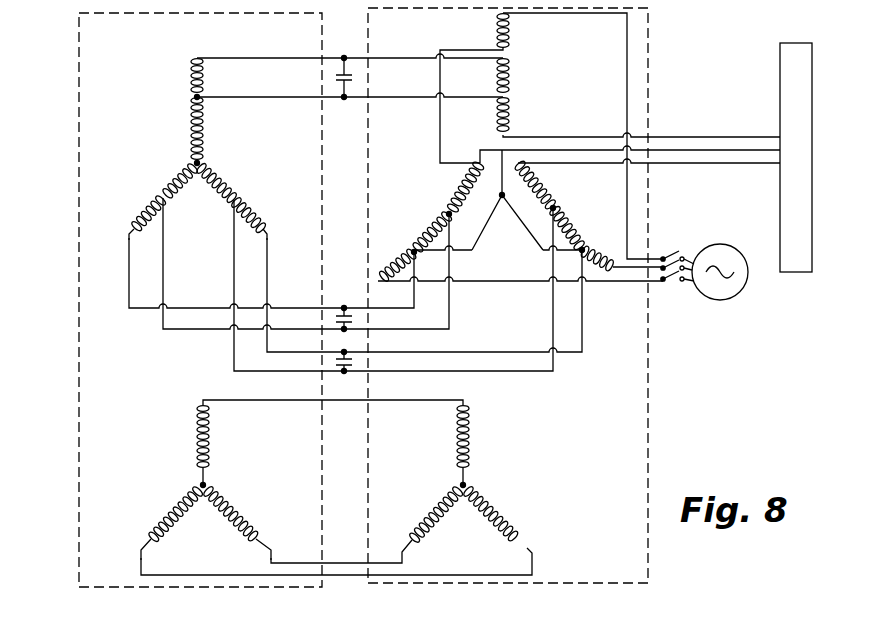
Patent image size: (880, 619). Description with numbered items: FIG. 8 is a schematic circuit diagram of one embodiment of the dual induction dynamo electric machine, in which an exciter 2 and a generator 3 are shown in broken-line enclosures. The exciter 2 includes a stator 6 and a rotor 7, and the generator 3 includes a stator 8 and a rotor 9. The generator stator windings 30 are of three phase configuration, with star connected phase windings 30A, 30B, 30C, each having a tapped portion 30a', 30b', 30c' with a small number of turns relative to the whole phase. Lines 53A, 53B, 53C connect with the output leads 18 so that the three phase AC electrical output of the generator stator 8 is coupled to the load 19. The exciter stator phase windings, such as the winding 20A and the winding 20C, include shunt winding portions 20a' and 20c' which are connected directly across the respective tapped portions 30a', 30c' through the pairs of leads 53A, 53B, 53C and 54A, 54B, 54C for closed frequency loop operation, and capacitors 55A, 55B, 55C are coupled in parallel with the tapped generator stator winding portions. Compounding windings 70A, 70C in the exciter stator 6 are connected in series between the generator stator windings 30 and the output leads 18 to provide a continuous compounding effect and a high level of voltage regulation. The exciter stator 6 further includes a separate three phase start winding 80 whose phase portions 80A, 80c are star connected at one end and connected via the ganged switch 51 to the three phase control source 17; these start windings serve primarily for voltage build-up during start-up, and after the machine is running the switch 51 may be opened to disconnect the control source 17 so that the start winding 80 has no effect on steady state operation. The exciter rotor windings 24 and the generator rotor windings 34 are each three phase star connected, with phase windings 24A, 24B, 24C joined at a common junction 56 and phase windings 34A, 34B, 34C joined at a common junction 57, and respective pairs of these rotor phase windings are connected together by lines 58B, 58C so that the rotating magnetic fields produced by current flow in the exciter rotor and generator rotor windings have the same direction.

The exciter 2 is at (648, 33).
The generator 3 is at (77, 46).
The exciter stator 6 is at (652, 54).
The exciter rotor 7 is at (656, 446).
The generator stator 8 is at (72, 138).
The generator rotor 9 is at (74, 410).
The control source 17 is at (721, 243).
The output leads 18 is at (731, 133).
The electrical load 19 is at (798, 43).
The exciter stator phase winding 20A is at (484, 43).
The shunt winding portion 20a' is at (533, 77).
The exciter stator phase winding 20C is at (542, 254).
The shunt winding portion 20c' is at (580, 225).
The exciter rotor windings 24 is at (474, 475).
The exciter rotor phase winding 24A is at (458, 445).
The exciter rotor phase winding 24B is at (424, 522).
The exciter rotor phase winding 24C is at (508, 512).
The generator stator windings 30 is at (191, 137).
The generator stator phase winding 30A is at (186, 110).
The tapped portion 30a' is at (167, 63).
The generator stator phase winding 30B is at (166, 176).
The tapped portion 30b' is at (125, 207).
The generator stator phase winding 30C is at (231, 176).
The tapped portion 30c' is at (262, 207).
The generator rotor windings 34 is at (188, 483).
The generator rotor phase winding 34A is at (200, 426).
The generator rotor phase winding 34B is at (163, 521).
The generator rotor phase winding 34C is at (227, 506).
The ganged switch 51 is at (676, 294).
The line 53A is at (280, 97).
The line 53B is at (163, 238).
The line 53C is at (234, 265).
The lead 54A is at (268, 57).
The lead 54B is at (129, 275).
The lead 54C is at (287, 252).
The capacitor 55A is at (353, 80).
The capacitor 55B is at (344, 307).
The capacitor 55C is at (356, 358).
The common junction 56 is at (466, 487).
The common junction 57 is at (206, 483).
The line 58B is at (217, 575).
The line 58C is at (302, 563).
The compound winding 70A is at (511, 117).
The compound winding 70C is at (524, 186).
The three phase start winding 80 is at (520, 166).
The start winding phase portion 80A is at (510, 32).
The start winding phase portion 80c is at (604, 270).